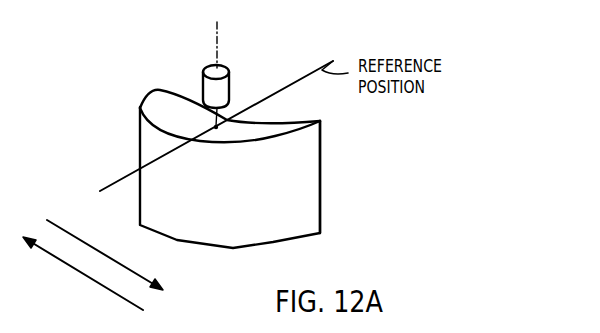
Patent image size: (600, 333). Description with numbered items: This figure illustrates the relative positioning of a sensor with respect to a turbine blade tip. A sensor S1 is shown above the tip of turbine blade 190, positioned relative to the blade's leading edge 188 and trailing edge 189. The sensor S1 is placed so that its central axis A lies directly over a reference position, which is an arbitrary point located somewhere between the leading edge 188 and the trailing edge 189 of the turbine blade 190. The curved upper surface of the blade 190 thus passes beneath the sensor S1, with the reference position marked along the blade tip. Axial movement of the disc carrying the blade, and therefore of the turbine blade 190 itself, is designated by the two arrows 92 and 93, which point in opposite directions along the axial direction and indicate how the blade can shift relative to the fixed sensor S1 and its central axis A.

The leading edge 188 is at (140, 107).
The trailing edge 189 is at (321, 126).
The turbine blade 190 is at (297, 207).
The arrow 92 is at (88, 244).
The arrow 93 is at (97, 283).
The sensor S1 is at (205, 83).
The central axis A is at (217, 28).